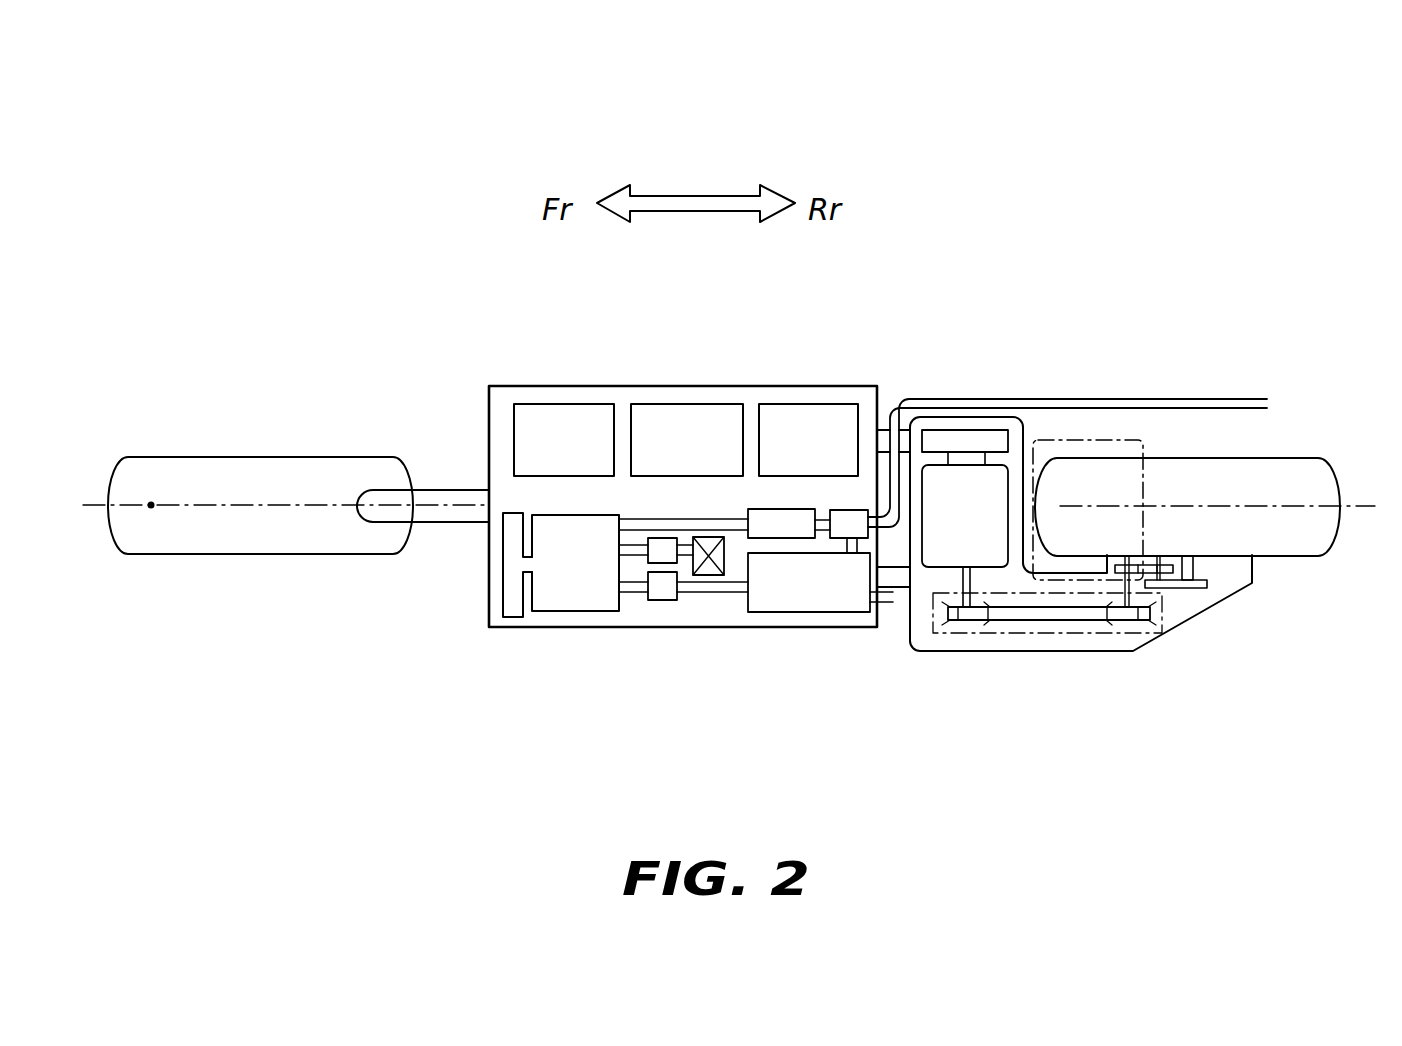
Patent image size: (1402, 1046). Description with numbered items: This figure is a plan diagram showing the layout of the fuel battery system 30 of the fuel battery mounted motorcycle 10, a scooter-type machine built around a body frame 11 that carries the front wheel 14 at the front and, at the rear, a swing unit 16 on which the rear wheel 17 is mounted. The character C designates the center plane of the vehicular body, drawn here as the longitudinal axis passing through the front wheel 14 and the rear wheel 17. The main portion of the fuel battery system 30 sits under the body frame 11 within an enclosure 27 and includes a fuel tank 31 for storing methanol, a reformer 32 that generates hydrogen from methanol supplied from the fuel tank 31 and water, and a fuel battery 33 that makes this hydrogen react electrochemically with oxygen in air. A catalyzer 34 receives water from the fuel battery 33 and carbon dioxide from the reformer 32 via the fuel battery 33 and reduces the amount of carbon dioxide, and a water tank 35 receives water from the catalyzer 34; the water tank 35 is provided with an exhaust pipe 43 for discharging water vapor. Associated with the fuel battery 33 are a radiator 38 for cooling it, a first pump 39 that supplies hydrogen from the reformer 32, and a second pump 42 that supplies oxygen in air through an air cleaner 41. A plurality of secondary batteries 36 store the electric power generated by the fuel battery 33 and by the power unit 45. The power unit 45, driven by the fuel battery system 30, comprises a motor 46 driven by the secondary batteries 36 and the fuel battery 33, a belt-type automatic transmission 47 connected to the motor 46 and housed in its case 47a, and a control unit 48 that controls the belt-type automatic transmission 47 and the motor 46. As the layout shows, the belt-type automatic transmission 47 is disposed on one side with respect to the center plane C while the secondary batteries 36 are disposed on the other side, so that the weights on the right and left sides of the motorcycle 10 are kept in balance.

The fuel battery mounted motorcycle 10 is at (272, 130).
The body frame 11 is at (467, 363).
The front wheel 14 is at (305, 457).
The swing unit 16 is at (967, 652).
The rear wheel 17 is at (1297, 458).
The housing 27 is at (505, 387).
The fuel battery system 30 is at (888, 310).
The fuel tank 31 is at (1113, 440).
The reformer 32 is at (805, 612).
The fuel battery 33 is at (575, 611).
The catalyzer 34 is at (777, 509).
The water tank 35 is at (847, 510).
The secondary batteries 36 is at (575, 404).
The radiator 38 is at (503, 600).
The first pump 39 is at (665, 600).
The air cleaner 41 is at (712, 537).
The second pump 42 is at (663, 538).
The exhaust pipe 43 is at (1027, 399).
The power unit 45 is at (921, 610).
The motor 46 is at (992, 568).
The belt-type automatic transmission 47 is at (1052, 625).
The case 47a is at (1128, 635).
The control unit 48 is at (960, 430).
The center plane C is at (151, 505).